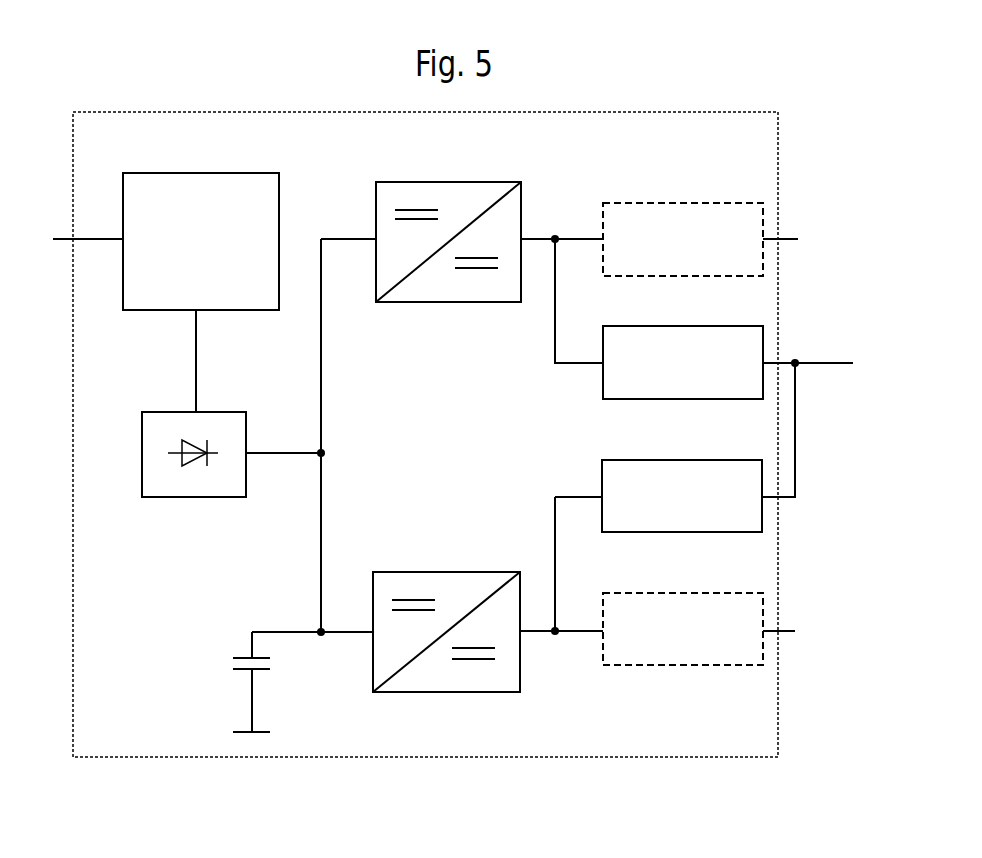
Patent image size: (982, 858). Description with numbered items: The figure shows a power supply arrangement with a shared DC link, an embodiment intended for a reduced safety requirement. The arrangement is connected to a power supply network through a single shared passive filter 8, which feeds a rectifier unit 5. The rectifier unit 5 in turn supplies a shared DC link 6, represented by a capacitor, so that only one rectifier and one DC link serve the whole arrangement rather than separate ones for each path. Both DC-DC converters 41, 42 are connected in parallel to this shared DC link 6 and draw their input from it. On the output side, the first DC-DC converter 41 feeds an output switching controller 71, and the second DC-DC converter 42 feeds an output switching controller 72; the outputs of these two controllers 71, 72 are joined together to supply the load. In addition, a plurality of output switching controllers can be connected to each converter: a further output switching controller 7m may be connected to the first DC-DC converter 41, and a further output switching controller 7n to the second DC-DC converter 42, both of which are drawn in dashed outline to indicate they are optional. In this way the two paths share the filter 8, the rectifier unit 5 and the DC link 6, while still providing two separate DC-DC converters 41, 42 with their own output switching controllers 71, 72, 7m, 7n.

The passive filter 8 is at (218, 173).
The rectifier unit 5 is at (160, 412).
The shared DC link 6 is at (262, 672).
The DC-DC converter 41 is at (448, 182).
The DC-DC converter 42 is at (445, 572).
The output switching controller 71 is at (764, 345).
The output switching controller 72 is at (700, 460).
The output switching controller 7m is at (764, 226).
The output switching controller 7n is at (764, 614).